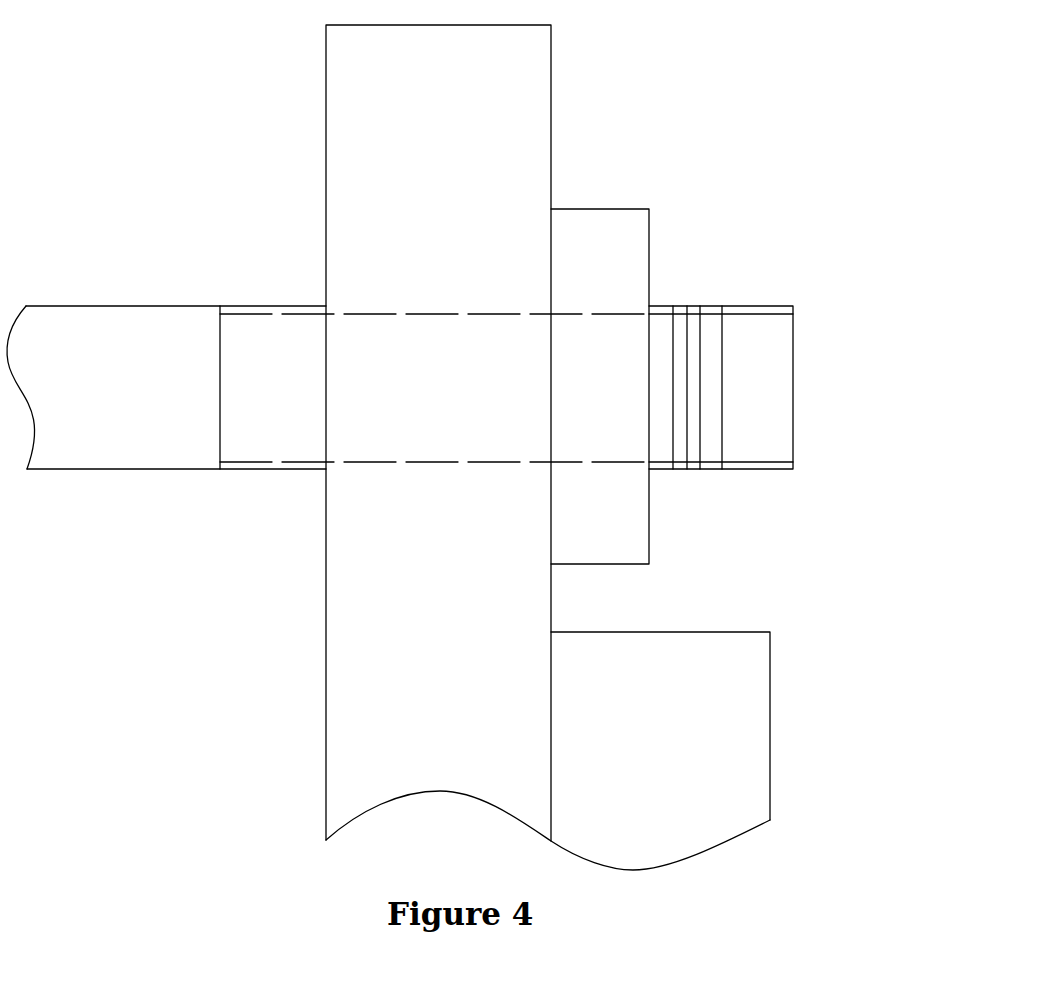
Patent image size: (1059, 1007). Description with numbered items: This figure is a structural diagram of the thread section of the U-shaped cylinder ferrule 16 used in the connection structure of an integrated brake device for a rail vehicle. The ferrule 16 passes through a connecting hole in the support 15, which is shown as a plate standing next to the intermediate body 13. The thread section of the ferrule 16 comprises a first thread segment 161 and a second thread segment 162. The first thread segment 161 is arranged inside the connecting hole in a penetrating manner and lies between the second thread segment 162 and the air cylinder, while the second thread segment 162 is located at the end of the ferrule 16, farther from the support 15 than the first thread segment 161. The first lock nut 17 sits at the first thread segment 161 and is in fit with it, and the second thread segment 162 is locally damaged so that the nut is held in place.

The intermediate body 13 is at (770, 685).
The support 15 is at (552, 85).
The U-shaped cylinder ferrule 16 is at (177, 306).
The first lock nut 17 is at (600, 210).
The first thread segment 161 is at (607, 462).
The second thread segment 162 is at (698, 314).